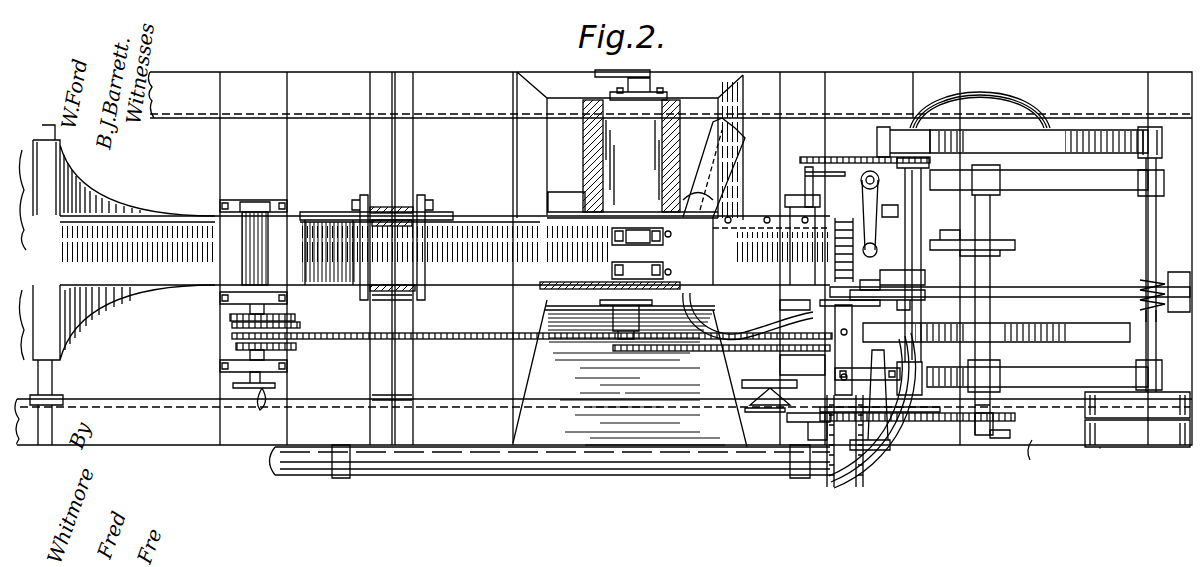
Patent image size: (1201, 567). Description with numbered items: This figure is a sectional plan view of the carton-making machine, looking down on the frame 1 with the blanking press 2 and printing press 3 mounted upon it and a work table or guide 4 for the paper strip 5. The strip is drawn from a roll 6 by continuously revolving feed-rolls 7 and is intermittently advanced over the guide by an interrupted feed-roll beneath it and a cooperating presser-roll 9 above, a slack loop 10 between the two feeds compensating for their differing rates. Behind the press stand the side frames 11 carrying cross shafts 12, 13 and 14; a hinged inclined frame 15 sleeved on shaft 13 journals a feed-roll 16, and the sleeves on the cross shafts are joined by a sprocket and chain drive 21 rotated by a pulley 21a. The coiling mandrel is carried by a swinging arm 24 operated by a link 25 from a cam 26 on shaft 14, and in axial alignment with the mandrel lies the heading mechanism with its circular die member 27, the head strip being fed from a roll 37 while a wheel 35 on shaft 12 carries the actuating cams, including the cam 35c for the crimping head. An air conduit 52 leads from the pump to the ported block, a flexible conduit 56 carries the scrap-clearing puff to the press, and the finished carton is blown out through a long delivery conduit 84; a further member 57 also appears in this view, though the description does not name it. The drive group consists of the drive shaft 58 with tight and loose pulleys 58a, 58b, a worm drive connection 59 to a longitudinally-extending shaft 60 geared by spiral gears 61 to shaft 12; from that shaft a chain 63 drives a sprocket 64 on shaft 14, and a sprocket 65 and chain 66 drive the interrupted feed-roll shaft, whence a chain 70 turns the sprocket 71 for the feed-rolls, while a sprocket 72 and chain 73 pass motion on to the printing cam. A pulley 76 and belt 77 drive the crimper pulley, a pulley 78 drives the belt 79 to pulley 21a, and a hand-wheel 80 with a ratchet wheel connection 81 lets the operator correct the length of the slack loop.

The frame 1 is at (880, 80).
The blanking press 2 is at (630, 145).
The printing press 3 is at (422, 215).
The work table or guide 4 is at (763, 284).
The paper strip 5 is at (178, 215).
The roll 6 is at (92, 304).
The feed-rolls 7 is at (287, 200).
The presser-roll 9 is at (612, 262).
The slack loop 10 is at (338, 213).
The side frames 11 is at (1032, 189).
The cross shaft 12 is at (834, 348).
The cross shaft 13 is at (940, 394).
The cross shaft 14 is at (990, 278).
The hinged inclined frame 15 is at (877, 167).
The feed-roll 16 is at (793, 205).
The sprocket and chain drive 21 is at (829, 158).
The pulley 21a is at (893, 126).
The swinging arm 24 is at (884, 214).
The link 25 is at (940, 240).
The cam 26 is at (905, 280).
The circular die member 27 is at (777, 266).
The wheel 35 is at (769, 413).
The cam 35c is at (800, 398).
The roll 37 is at (923, 307).
The air conduit 52 is at (1035, 92).
The flexible conduit 56 is at (710, 348).
The pipe 57 is at (925, 362).
The drive shaft 58 is at (1150, 207).
The tight pulley 58a is at (1088, 420).
The loose pulley 58b is at (1088, 448).
The worm drive connection 59 is at (1142, 288).
The longitudinally-extending shaft 60 is at (1038, 290).
The spiral gears 61 is at (800, 306).
The chain 63 is at (953, 435).
The sprocket 64 is at (1000, 440).
The sprocket 65 is at (793, 355).
The chain 66 is at (660, 353).
The chain 70 is at (461, 333).
The sprocket 71 is at (230, 333).
The sprocket 72 is at (285, 372).
The chain 73 is at (330, 353).
The pulley 76 is at (1092, 352).
The belt 77 is at (1047, 327).
The pulley 78 is at (1159, 126).
The belt 79 is at (1072, 130).
The hand-wheel 80 is at (261, 393).
The ratchet wheel connection 81 is at (290, 312).
The delivery conduit 84 is at (880, 468).